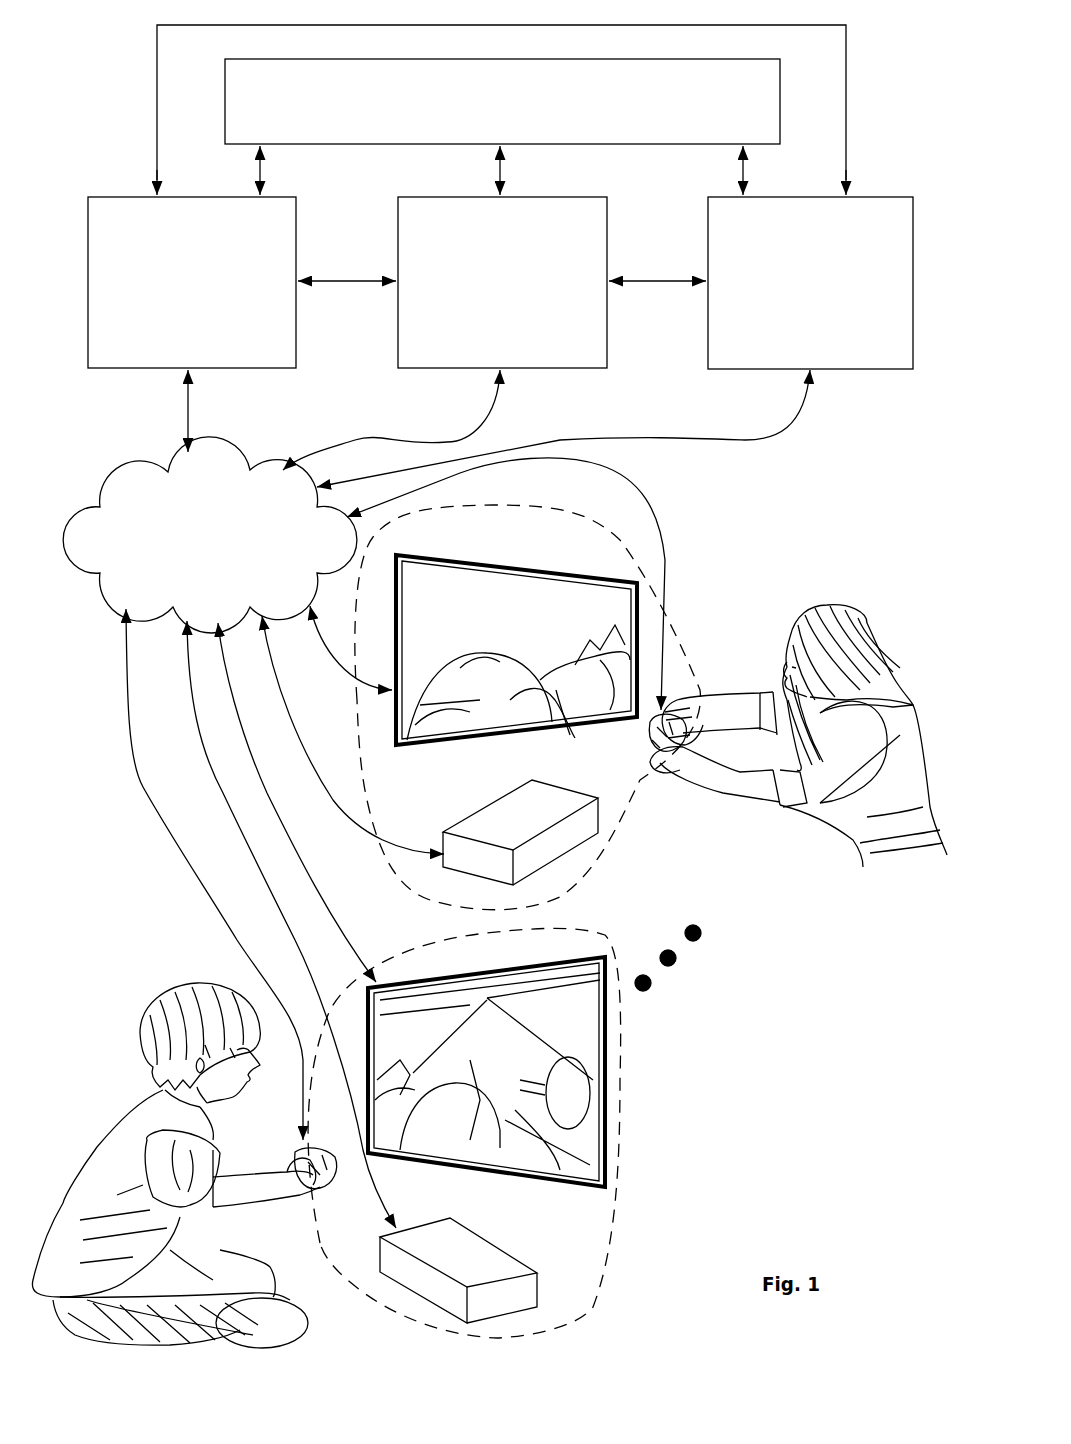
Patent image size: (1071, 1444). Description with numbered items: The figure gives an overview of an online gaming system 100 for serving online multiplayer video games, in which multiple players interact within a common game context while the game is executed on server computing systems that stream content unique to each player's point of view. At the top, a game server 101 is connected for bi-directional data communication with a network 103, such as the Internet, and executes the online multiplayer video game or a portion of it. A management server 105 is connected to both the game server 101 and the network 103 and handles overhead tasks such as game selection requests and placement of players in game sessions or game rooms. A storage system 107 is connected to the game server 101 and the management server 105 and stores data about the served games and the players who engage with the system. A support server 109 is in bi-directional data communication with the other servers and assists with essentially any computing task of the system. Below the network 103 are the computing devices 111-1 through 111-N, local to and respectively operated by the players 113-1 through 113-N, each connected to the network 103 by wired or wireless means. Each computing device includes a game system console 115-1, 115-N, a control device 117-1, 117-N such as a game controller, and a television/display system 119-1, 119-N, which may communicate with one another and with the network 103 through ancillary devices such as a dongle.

The online gaming system 100 is at (102, 72).
The game server 101 is at (502, 282).
The network 103 is at (436, 501).
The management server 105 is at (192, 282).
The storage system 107 is at (502, 101).
The support server 109 is at (810, 283).
The computing device 111-1 is at (615, 1150).
The computing device 111-N is at (583, 885).
The player 113-1 is at (148, 1007).
The player 113-N is at (833, 600).
The game system console 115-1 is at (427, 1283).
The game system console 115-N is at (580, 820).
The control device 117-1 is at (290, 1150).
The control device 117-N is at (645, 752).
The television/display system 119-1 is at (580, 1035).
The television/display system 119-N is at (529, 592).